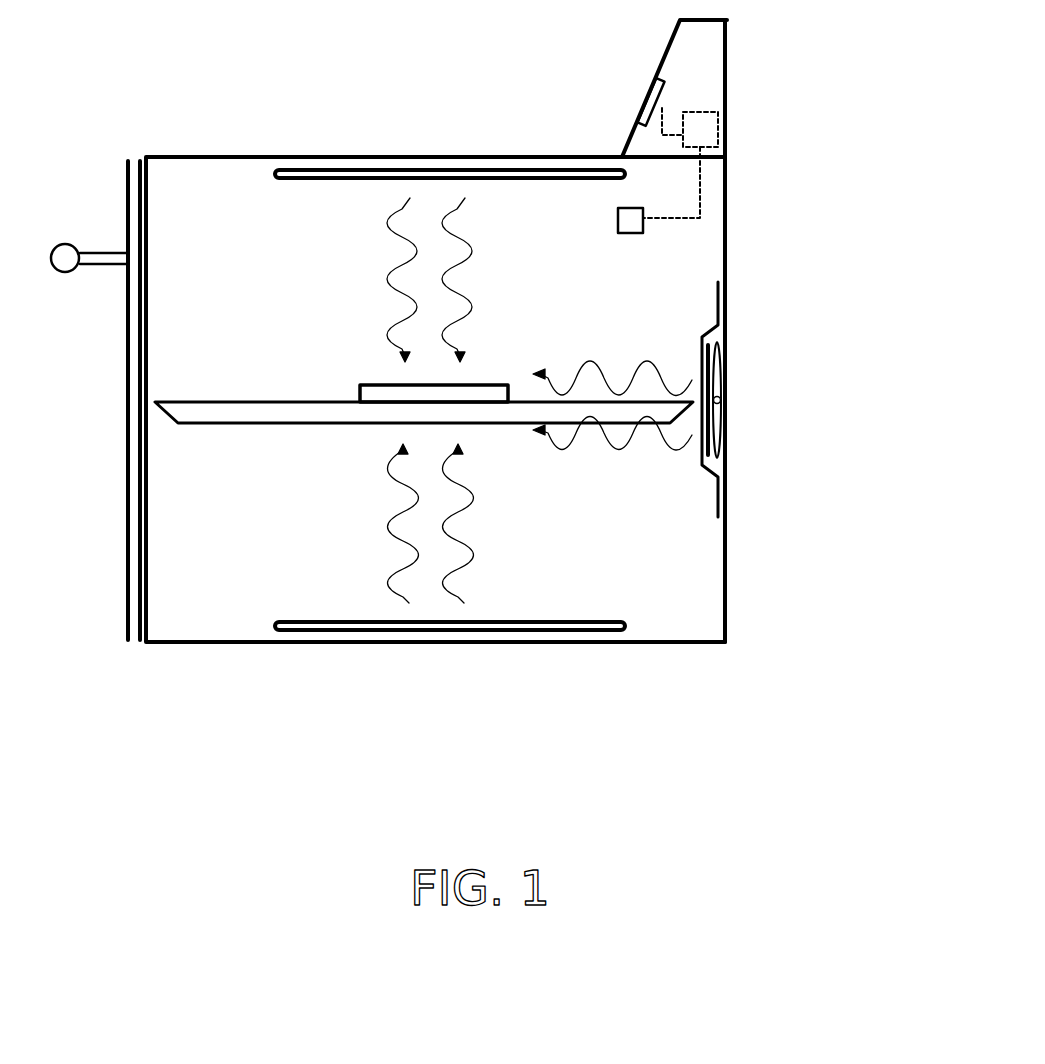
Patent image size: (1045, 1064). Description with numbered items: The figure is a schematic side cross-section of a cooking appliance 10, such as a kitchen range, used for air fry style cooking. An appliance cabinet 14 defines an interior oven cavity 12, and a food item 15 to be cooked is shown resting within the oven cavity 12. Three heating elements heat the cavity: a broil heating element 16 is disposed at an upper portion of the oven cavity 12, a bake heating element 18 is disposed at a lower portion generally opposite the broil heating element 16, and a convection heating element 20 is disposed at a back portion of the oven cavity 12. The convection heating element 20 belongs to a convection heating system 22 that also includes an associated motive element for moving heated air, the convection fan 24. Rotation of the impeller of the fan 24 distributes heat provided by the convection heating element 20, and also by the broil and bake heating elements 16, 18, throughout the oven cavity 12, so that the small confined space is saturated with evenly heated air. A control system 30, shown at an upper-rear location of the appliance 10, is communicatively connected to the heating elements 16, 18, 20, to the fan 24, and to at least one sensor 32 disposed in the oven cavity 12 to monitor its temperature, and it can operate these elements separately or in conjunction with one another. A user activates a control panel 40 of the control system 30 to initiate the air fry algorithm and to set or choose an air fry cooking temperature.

The cooking appliance 10 is at (773, 163).
The oven cavity 12 is at (267, 238).
The appliance cabinet 14 is at (728, 562).
The food item 15 is at (358, 386).
The broil heating element 16 is at (320, 167).
The bake heating element 18 is at (297, 642).
The convection heating element 20 is at (705, 350).
The convection heating system 22 is at (751, 396).
The convection fan 24 is at (728, 362).
The control system 30 is at (700, 112).
The sensor 32 is at (623, 208).
The control panel 40 is at (660, 80).